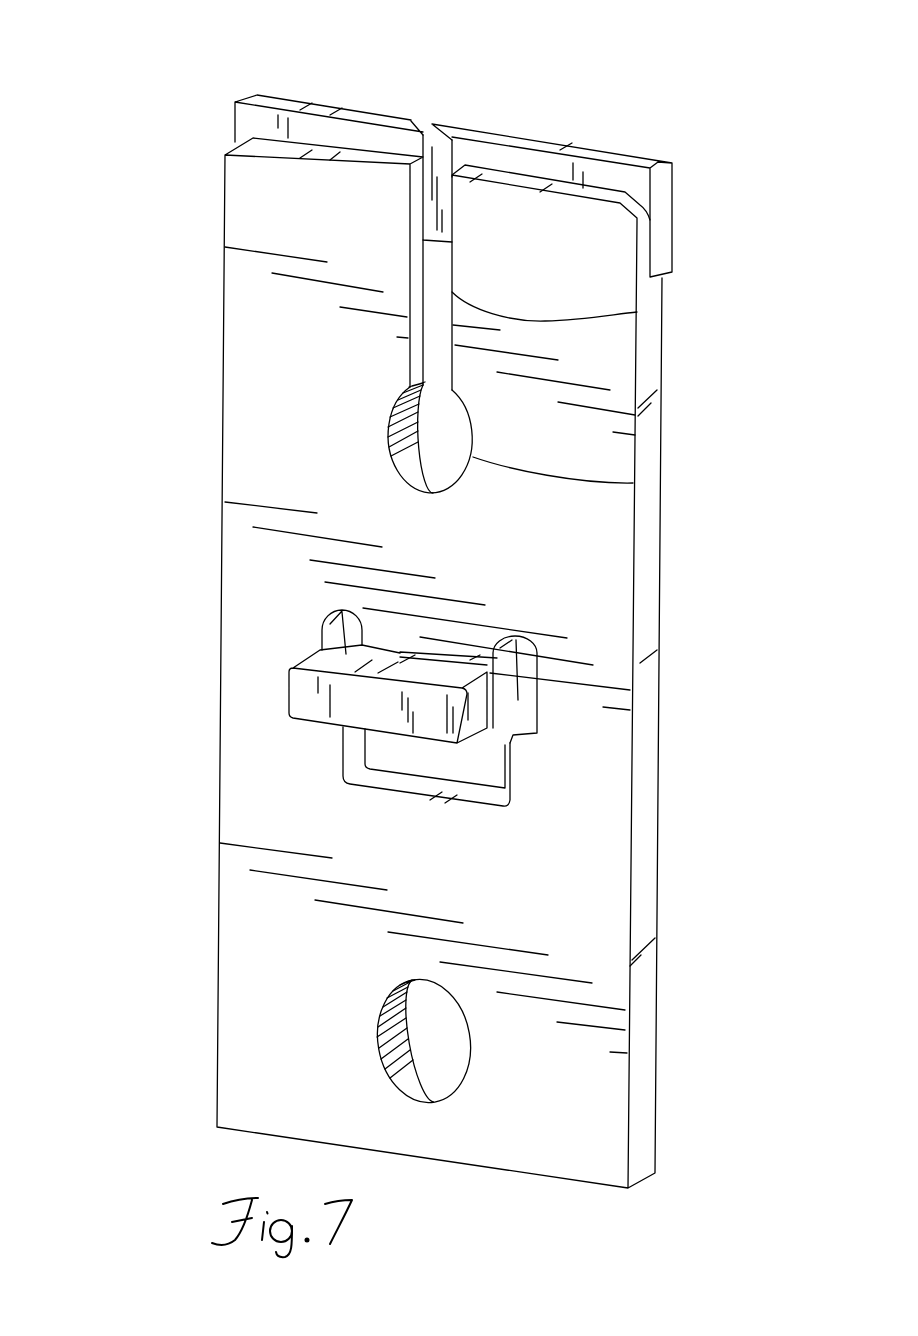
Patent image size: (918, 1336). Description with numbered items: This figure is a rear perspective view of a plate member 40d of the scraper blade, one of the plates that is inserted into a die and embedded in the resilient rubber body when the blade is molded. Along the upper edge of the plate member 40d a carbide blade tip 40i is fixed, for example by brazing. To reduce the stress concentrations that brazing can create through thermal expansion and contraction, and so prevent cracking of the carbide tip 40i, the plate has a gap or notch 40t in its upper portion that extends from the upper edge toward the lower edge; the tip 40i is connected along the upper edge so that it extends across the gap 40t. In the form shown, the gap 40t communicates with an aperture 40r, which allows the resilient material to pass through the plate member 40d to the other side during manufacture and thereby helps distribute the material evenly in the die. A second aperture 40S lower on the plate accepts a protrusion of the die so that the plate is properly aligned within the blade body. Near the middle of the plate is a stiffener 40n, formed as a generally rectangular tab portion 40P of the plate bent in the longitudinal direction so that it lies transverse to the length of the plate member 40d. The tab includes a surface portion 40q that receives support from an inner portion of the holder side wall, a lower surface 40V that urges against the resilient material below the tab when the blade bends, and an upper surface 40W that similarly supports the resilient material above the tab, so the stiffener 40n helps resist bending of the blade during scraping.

The carbide blade tip 40i is at (658, 163).
The gap or notch 40t is at (637, 312).
The aperture 40r is at (633, 483).
The stiffener 40n is at (409, 705).
The plate member 40d is at (715, 652).
The aperture 40S is at (468, 1078).
The upper surface of the tab 40W is at (353, 660).
The tab portion 40P is at (268, 644).
The surface portion 40q is at (310, 702).
The lower surface of the tab 40V is at (317, 727).